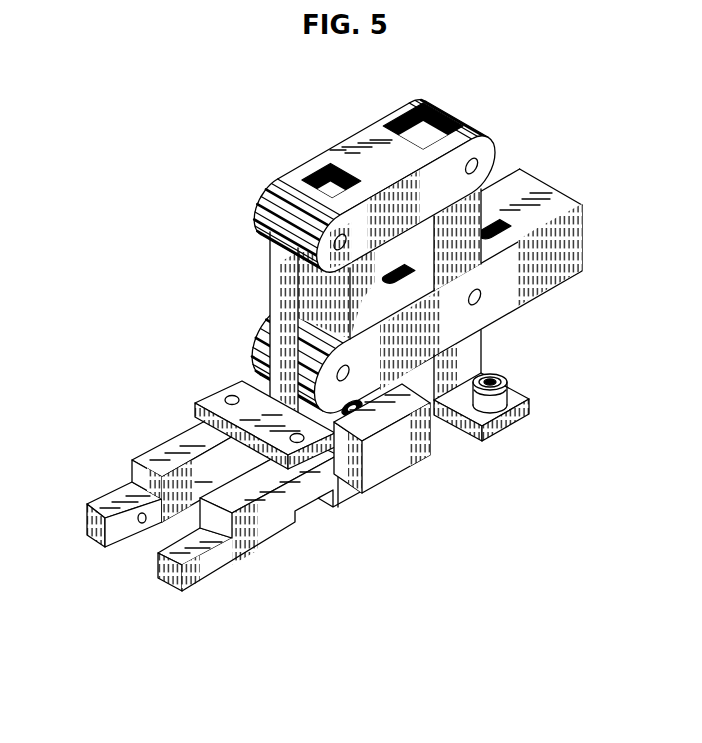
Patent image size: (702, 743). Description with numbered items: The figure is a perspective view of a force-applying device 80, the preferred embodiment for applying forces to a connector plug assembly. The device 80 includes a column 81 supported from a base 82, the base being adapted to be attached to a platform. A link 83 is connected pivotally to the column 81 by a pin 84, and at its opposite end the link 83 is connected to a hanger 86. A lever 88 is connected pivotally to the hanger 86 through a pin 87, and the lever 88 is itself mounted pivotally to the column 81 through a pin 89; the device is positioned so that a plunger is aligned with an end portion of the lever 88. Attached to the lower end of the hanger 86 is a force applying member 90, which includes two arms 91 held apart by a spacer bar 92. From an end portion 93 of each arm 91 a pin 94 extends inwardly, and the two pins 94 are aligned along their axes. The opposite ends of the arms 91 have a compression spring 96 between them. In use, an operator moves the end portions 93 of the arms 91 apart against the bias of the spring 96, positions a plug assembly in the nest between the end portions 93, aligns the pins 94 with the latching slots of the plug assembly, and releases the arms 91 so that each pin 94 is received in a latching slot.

The force-applying device 80 is at (510, 542).
The column 81 is at (472, 352).
The base 82 is at (502, 427).
The link 83 is at (408, 184).
The pin 84 is at (485, 162).
The hanger 86 is at (281, 281).
The pin 87 is at (346, 379).
The lever 88 is at (421, 324).
The pin 89 is at (480, 301).
The force applying member 90 is at (383, 445).
The arm 91 is at (268, 537).
The spacer bar 92 is at (240, 397).
The end portion 93 is at (201, 579).
The pin 94 is at (141, 524).
The compression spring 96 is at (358, 410).